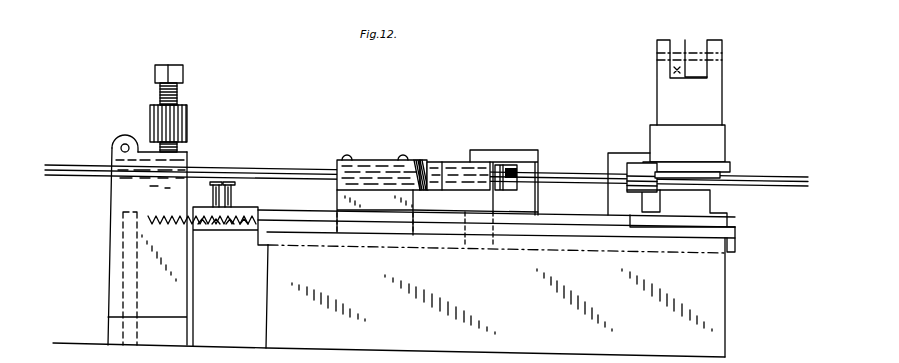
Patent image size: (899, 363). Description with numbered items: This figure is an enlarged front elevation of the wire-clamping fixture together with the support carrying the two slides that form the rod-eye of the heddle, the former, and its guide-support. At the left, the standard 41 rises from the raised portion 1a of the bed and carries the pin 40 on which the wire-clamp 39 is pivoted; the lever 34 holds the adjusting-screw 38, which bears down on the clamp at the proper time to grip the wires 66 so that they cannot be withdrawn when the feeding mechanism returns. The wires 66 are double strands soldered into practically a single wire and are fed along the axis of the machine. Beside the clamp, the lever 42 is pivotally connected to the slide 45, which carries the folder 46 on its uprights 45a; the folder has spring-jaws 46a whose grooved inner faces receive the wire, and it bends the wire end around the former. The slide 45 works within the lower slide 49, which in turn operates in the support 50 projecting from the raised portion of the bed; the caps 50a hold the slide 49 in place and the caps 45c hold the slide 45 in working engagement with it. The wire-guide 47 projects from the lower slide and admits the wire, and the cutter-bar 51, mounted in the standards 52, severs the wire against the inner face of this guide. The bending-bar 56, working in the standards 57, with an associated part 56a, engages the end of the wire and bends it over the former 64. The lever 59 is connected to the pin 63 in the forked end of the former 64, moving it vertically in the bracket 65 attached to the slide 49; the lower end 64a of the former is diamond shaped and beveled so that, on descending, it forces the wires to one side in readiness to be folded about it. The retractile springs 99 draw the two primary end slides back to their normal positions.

The raised portion of the bed 1a is at (213, 327).
The lever 34 is at (188, 137).
The adjusting-screw 38 is at (178, 97).
The wire-clamp 39 is at (162, 159).
The pin 40 is at (121, 148).
The standard 41 is at (147, 194).
The lever 42 is at (233, 198).
The slide 45 is at (230, 270).
The uprights 45a is at (375, 212).
The caps 45c is at (496, 216).
The folder 46 is at (377, 156).
The spring-jaws 46a is at (458, 162).
The wire-guide 47 is at (437, 221).
The lower slide 49 is at (737, 247).
The support 50 is at (495, 297).
The caps 50a is at (501, 228).
The cutter-bar 51 is at (514, 170).
The standards 52 is at (508, 146).
The bending-bar 56 is at (627, 168).
The clamp 56a is at (660, 191).
The standards 57 is at (627, 177).
The lever 59 is at (703, 42).
The pin 63 is at (674, 50).
The former 64 is at (689, 82).
The lower end of the former 64a is at (722, 177).
The bracket 65 is at (509, 166).
The wires 66 is at (80, 167).
The retractile springs 99 is at (229, 225).